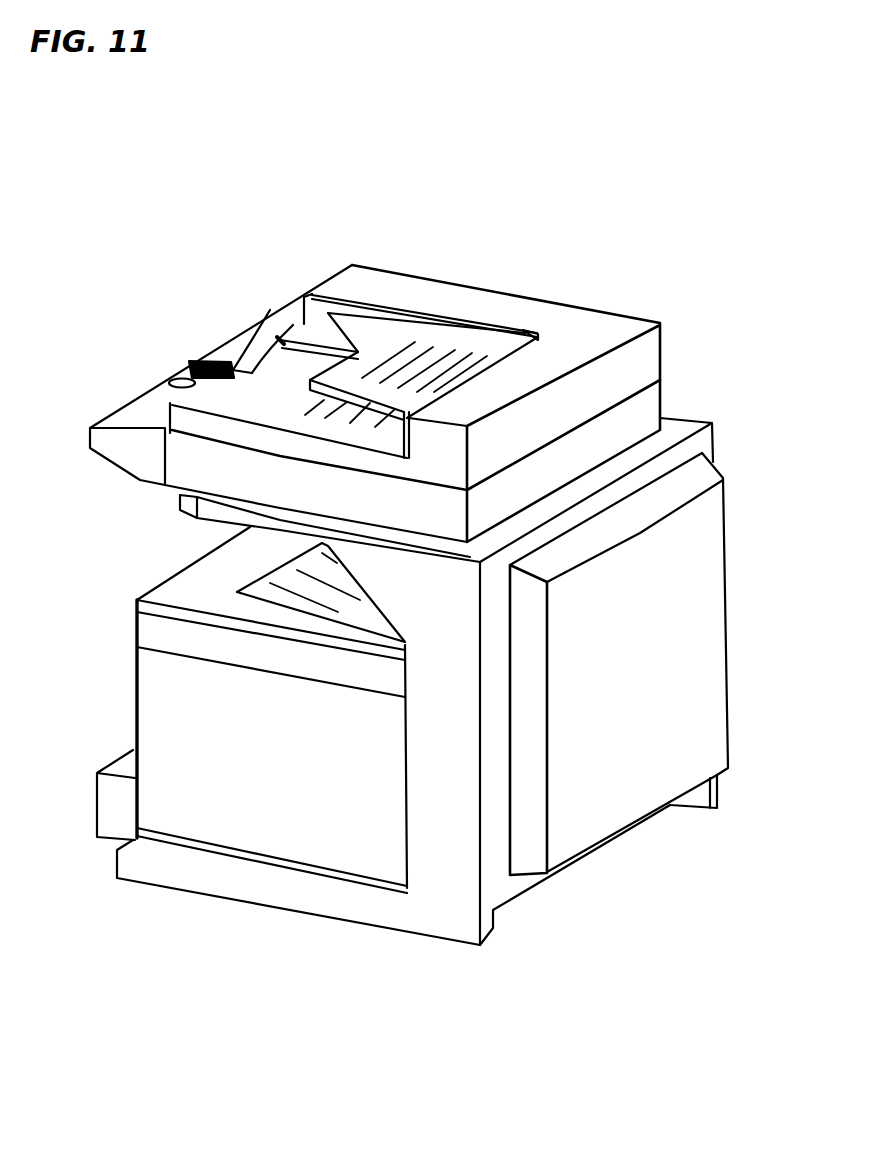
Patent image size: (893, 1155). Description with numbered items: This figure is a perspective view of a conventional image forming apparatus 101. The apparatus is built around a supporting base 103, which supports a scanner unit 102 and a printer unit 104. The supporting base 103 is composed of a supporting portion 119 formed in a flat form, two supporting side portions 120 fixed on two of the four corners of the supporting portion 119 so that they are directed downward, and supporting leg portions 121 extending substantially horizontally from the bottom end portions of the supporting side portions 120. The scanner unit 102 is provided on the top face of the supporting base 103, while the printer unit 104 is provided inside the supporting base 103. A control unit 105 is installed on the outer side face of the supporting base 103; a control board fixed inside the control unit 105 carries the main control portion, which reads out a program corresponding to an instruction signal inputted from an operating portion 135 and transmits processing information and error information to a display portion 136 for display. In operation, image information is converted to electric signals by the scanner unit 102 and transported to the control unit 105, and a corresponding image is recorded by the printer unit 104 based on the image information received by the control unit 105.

The image forming apparatus 101 is at (583, 285).
The scanner unit 102 is at (470, 310).
The supporting base 103 is at (448, 910).
The printer unit 104 is at (170, 726).
The control unit 105 is at (712, 667).
The supporting portion 119 is at (232, 507).
The supporting side portions 120 is at (443, 813).
The supporting leg portions 121 is at (223, 872).
The operating portion 135 is at (208, 352).
The display portion 136 is at (258, 330).